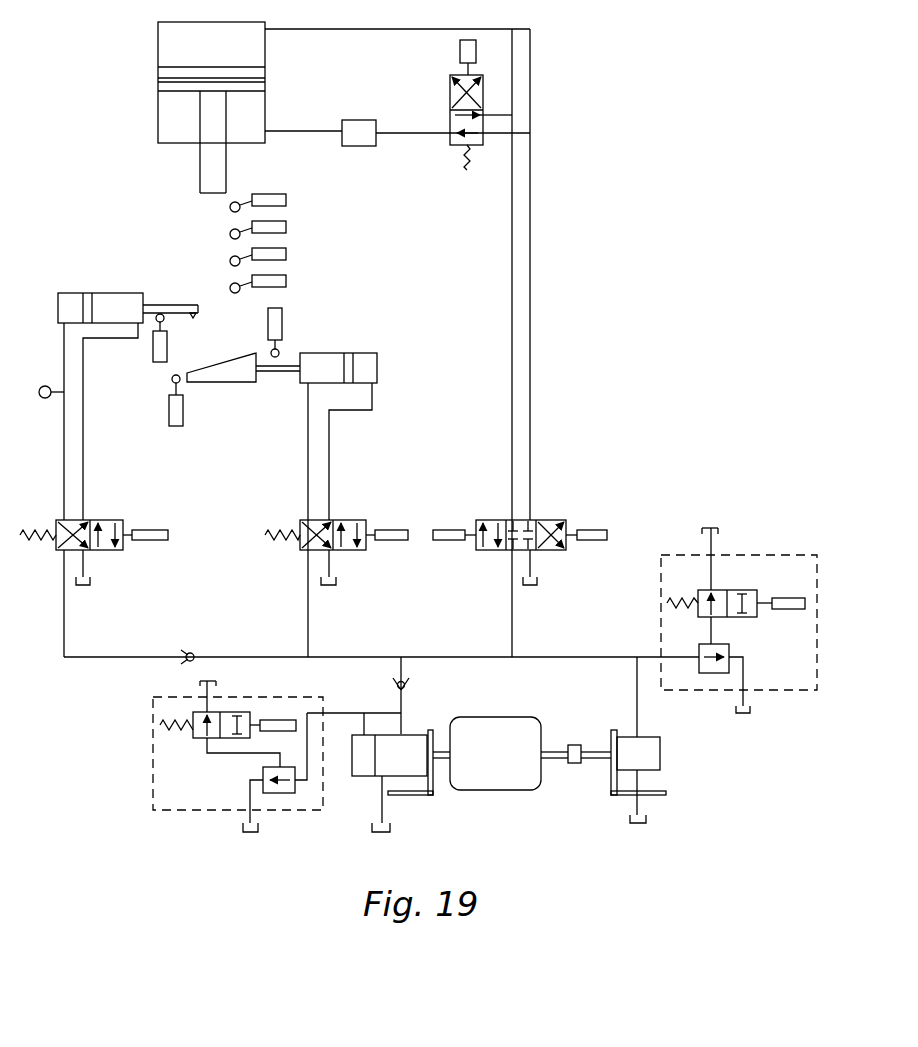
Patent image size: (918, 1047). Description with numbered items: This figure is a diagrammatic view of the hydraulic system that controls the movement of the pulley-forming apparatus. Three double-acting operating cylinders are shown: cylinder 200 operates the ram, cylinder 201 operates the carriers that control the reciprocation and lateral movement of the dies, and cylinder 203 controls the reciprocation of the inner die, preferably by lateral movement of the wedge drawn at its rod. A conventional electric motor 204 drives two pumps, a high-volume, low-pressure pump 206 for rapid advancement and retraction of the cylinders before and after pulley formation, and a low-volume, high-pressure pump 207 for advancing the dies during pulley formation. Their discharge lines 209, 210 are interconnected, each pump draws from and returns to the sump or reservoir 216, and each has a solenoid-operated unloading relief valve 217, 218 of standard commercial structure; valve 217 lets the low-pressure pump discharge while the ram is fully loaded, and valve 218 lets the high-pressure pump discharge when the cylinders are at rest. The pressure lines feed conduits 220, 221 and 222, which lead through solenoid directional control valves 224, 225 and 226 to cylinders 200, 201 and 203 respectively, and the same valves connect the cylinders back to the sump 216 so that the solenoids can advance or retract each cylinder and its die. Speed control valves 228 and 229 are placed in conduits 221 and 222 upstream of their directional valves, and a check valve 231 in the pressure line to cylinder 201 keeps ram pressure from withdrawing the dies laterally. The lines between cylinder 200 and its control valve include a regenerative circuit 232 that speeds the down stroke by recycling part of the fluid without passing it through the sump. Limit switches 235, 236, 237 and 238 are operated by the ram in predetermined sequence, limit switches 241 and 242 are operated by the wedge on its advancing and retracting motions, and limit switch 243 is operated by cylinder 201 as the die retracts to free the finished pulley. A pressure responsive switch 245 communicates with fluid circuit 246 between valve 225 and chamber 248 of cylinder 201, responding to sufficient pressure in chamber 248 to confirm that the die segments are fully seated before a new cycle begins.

The double-acting operating cylinder 200 is at (158, 32).
The double-acting operating cylinder 201 is at (108, 293).
The double-acting operating cylinder 203 is at (332, 353).
The electric motor 204 is at (505, 780).
The high-volume, low-pressure pump 206 is at (405, 770).
The low-volume, high-pressure pump 207 is at (660, 752).
The discharge line 209 is at (403, 702).
The discharge line 210 is at (637, 693).
The sump or reservoir 216 is at (85, 568).
The solenoid-operated unloading relief valve 217 is at (222, 812).
The solenoid-operated unloading relief valve 218 is at (763, 692).
The conduit 220 is at (513, 632).
The conduit 221 is at (64, 655).
The conduit 222 is at (308, 652).
The solenoid directional control valve 224 is at (550, 520).
The solenoid directional control valve 225 is at (93, 520).
The solenoid directional control valve 226 is at (345, 520).
The speed control valve 228 is at (70, 607).
The speed control valve 229 is at (314, 608).
The check valve 231 is at (191, 652).
The regenerative circuit 232 is at (450, 95).
The limit switch 235 is at (286, 199).
The limit switch 236 is at (286, 226).
The limit switch 237 is at (286, 253).
The limit switch 238 is at (286, 280).
The limit switch 241 is at (282, 318).
The limit switch 242 is at (183, 413).
The limit switch 243 is at (167, 347).
The pressure responsive switch 245 is at (44, 386).
The fluid circuit 246 is at (64, 452).
The chamber 248 is at (72, 300).